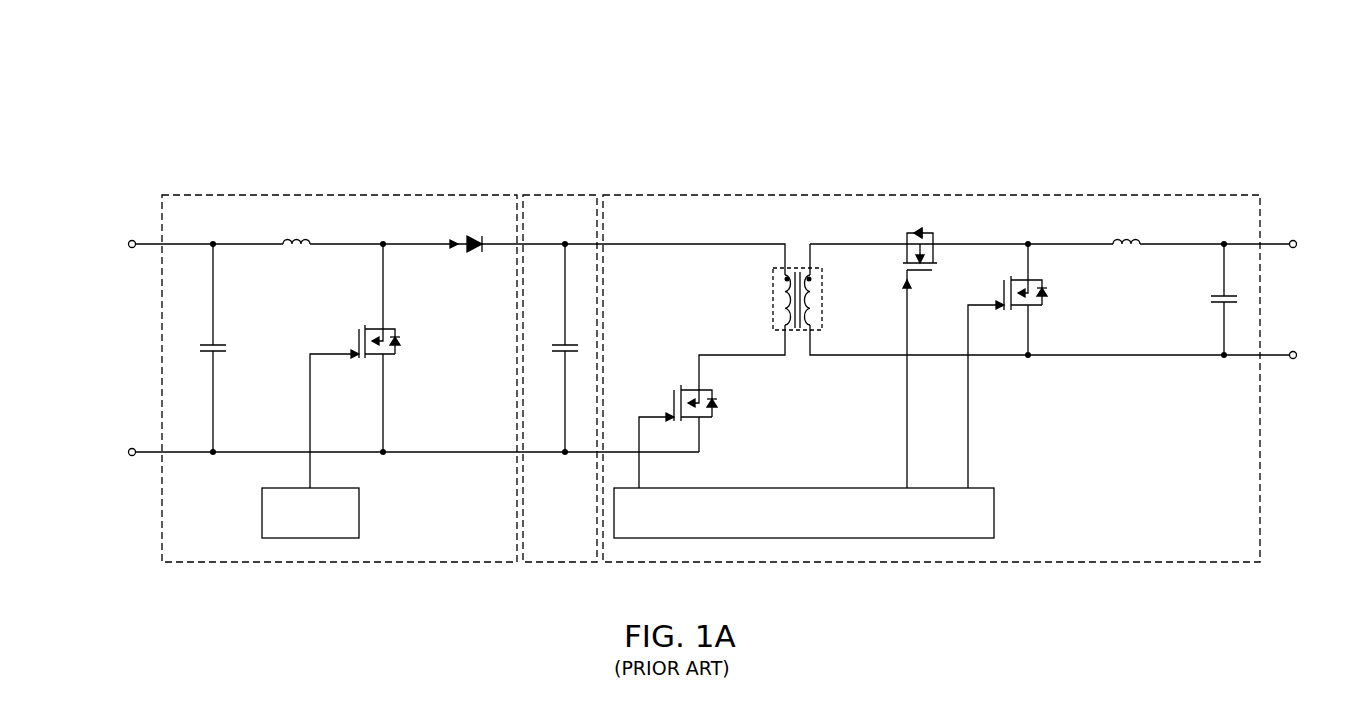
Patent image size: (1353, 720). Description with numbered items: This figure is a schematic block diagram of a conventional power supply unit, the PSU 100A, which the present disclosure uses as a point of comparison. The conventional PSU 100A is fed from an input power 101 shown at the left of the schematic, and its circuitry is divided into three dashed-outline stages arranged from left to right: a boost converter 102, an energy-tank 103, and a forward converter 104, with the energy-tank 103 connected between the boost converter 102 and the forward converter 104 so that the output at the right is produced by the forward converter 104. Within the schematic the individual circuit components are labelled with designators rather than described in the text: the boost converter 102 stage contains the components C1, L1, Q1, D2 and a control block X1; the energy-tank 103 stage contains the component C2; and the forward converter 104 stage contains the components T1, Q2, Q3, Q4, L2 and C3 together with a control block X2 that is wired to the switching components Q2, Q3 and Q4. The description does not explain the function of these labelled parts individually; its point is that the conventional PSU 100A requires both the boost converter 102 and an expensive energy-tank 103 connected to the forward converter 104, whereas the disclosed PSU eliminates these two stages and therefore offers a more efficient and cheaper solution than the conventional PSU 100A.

The conventional power supply unit 100A is at (1244, 61).
The input power 101 is at (100, 318).
The boost converter 102 is at (328, 195).
The energy-tank 103 is at (565, 195).
The forward converter 104 is at (950, 195).
The input capacitor C1 is at (221, 348).
The buck inductor L1 is at (298, 232).
The buck switch Q1 is at (368, 366).
The freewheeling diode D2 is at (471, 234).
The buck controller X1 is at (310, 513).
The bus capacitor C2 is at (556, 348).
The transformer T1 is at (797, 286).
The primary switch Q2 is at (693, 422).
The synchronous rectifier switch Q3 is at (918, 347).
The synchronous rectifier switch Q4 is at (1022, 366).
The output inductor L2 is at (1128, 232).
The output capacitor C3 is at (1214, 299).
The secondary controller X2 is at (804, 513).